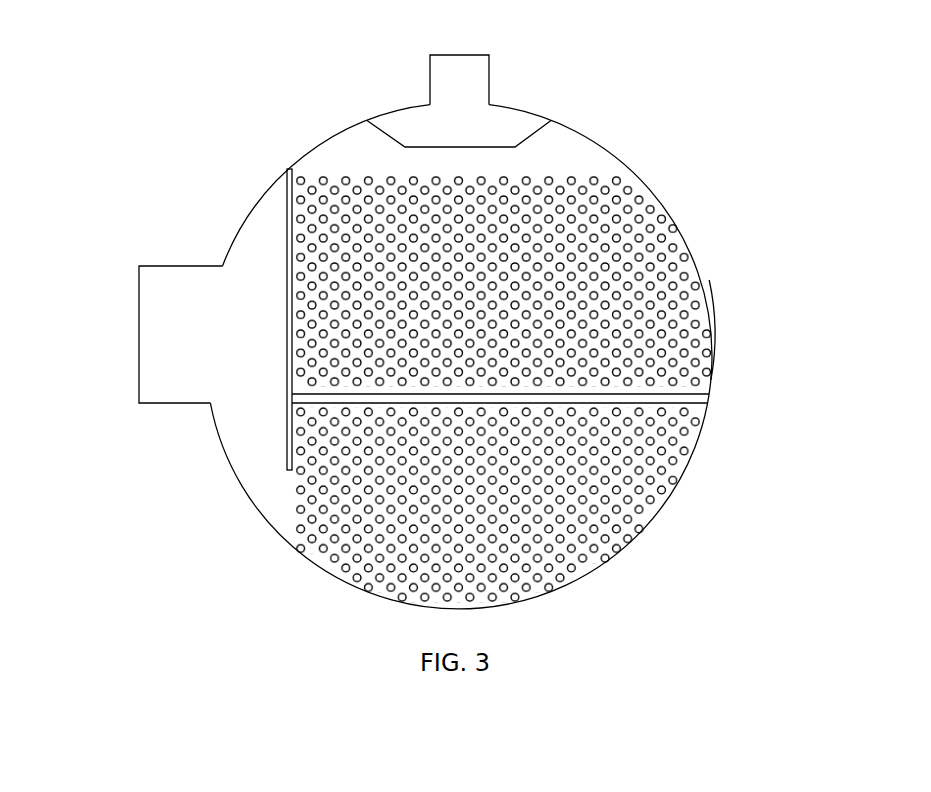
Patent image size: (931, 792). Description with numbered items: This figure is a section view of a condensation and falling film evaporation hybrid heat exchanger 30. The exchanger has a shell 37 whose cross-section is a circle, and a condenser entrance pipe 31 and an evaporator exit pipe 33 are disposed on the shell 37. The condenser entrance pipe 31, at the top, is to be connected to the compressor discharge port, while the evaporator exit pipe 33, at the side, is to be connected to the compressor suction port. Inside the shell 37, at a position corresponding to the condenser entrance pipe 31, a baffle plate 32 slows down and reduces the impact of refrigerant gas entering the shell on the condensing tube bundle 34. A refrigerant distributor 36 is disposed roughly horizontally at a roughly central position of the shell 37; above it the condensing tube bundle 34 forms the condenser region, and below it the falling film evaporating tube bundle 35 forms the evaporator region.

The condensation and falling film evaporation hybrid heat exchanger 30 is at (278, 107).
The condenser entrance pipe 31 is at (446, 73).
The baffle plate 32 is at (513, 147).
The evaporator exit pipe 33 is at (140, 347).
The condensing tube bundle 34 is at (638, 217).
The falling film evaporating tube bundle 35 is at (625, 480).
The refrigerant distributor 36 is at (697, 405).
The shell 37 is at (710, 330).